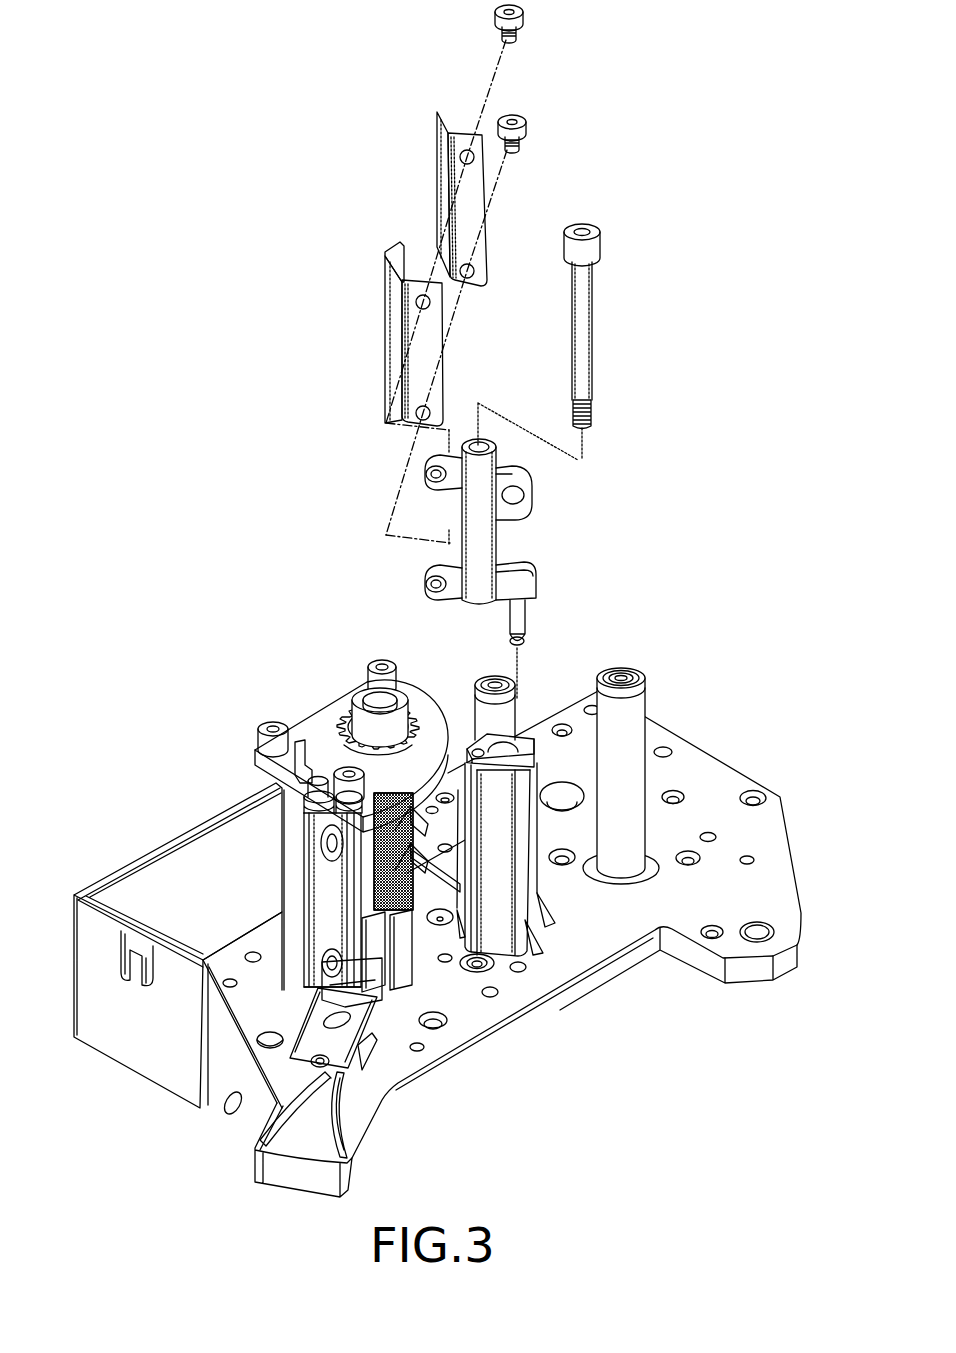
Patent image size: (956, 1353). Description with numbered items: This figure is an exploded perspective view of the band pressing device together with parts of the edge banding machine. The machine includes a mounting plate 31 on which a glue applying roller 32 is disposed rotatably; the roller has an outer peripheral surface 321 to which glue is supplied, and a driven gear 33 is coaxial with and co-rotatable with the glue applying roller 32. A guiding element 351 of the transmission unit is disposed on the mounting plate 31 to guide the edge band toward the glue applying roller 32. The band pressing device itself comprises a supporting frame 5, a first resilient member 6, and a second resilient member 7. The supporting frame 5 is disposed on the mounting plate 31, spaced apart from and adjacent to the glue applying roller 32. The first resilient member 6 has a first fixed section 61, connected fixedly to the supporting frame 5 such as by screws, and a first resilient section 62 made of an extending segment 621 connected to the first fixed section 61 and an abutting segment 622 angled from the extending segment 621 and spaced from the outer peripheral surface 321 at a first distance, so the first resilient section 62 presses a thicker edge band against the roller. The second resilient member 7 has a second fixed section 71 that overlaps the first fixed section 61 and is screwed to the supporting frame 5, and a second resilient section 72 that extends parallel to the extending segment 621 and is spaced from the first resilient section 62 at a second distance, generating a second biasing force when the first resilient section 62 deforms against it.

The second resilient member 7 is at (452, 201).
The second fixed section 71 is at (470, 233).
The second resilient section 72 is at (440, 186).
The first resilient member 6 is at (396, 320).
The first fixed section 61 is at (424, 373).
The first resilient section 62 is at (338, 319).
The extending segment 621 is at (388, 320).
The abutting segment 622 is at (399, 248).
The supporting frame 5 is at (497, 533).
The mounting plate 31 is at (634, 960).
The glue applying roller 32 is at (435, 877).
The outer peripheral surface 321 is at (412, 883).
The driven gear 33 is at (347, 725).
The guiding element 351 is at (412, 975).